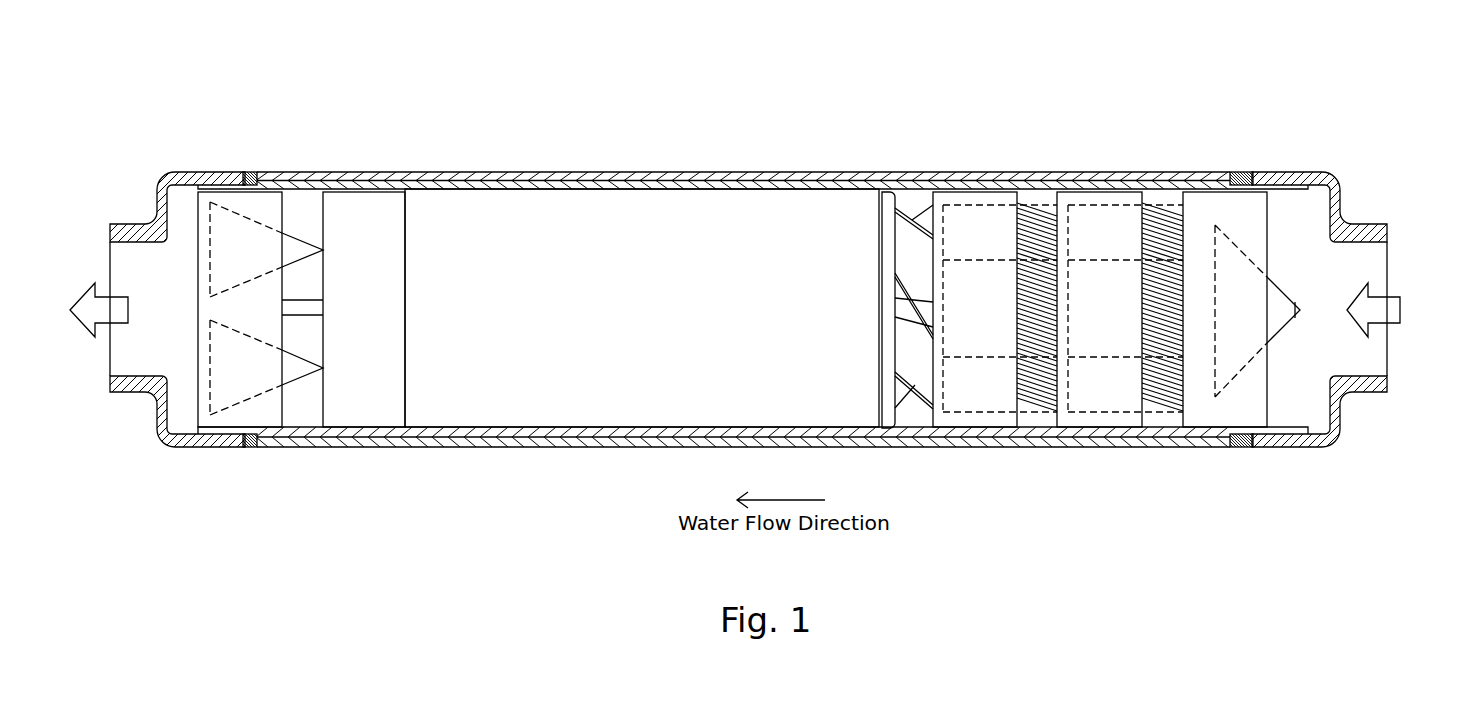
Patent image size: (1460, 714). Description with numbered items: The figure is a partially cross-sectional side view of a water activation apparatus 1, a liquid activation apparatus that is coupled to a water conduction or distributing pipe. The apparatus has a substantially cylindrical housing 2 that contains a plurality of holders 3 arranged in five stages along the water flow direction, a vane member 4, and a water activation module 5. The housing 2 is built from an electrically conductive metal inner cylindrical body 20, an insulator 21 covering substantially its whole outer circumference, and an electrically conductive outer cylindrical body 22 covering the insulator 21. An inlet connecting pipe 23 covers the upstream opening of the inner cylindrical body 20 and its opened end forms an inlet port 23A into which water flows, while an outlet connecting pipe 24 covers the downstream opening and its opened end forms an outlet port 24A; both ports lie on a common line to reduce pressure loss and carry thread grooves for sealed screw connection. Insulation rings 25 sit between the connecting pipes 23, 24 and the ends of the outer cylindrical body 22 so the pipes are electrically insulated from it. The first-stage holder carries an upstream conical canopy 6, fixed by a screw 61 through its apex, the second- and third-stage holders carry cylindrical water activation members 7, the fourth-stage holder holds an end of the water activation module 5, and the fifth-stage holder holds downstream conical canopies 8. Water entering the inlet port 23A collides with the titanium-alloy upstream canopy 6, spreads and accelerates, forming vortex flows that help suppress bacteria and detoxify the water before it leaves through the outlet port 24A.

The water activation apparatus 1 is at (1304, 52).
The housing 2 is at (756, 293).
The holder 3 is at (237, 415).
The vane member 4 is at (917, 378).
The water activation module 5 is at (610, 397).
The upstream conical canopy 6 is at (1278, 300).
The screw 61 is at (1300, 318).
The cylindrical water activation member 7 is at (1035, 275).
The downstream conical canopy 8 is at (290, 247).
The inner cylindrical body 20 is at (597, 185).
The insulator 21 is at (658, 182).
The outer cylindrical body 22 is at (765, 172).
The inlet connecting pipe 23 is at (1337, 445).
The inlet port 23A is at (1372, 361).
The outlet connecting pipe 24 is at (158, 448).
The outlet port 24A is at (117, 345).
The insulation ring 25 is at (247, 172).